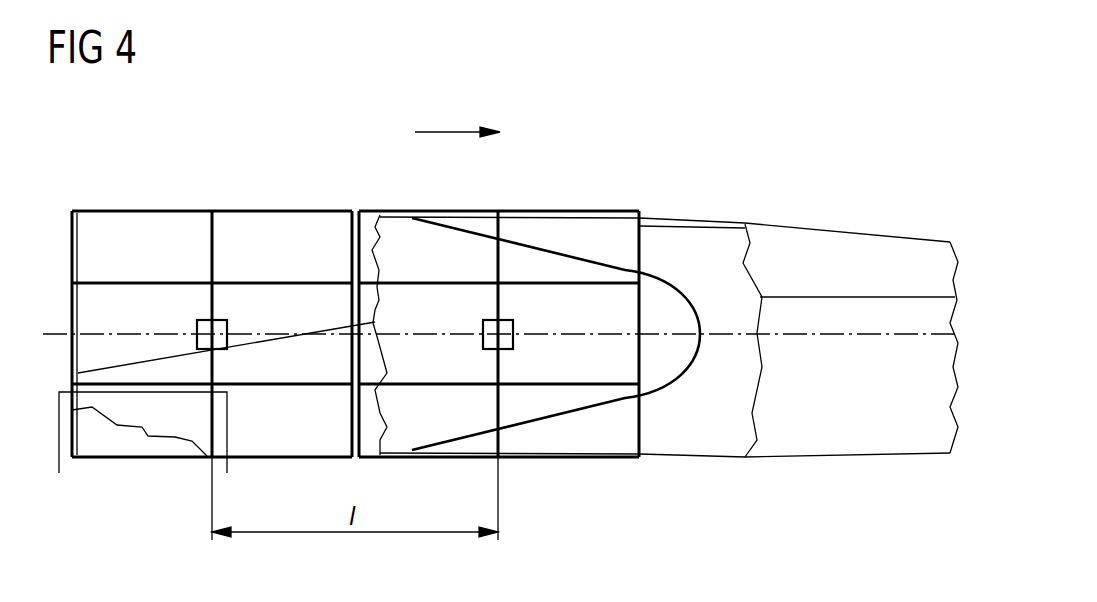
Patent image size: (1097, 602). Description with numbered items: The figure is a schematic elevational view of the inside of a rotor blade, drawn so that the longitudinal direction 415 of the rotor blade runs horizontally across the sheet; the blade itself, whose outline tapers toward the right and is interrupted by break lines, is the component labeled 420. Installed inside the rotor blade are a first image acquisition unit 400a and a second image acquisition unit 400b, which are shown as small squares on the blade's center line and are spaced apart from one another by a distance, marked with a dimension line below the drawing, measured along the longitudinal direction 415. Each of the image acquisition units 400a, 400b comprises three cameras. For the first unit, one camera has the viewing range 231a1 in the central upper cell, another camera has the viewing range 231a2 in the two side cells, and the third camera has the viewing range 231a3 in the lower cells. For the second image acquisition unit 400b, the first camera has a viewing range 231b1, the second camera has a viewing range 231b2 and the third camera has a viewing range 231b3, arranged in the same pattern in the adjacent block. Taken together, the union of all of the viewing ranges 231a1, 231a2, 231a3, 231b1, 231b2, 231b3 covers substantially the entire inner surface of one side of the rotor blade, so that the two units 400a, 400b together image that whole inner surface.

The viewing range 231a1 is at (267, 222).
The viewing range 231a2 is at (130, 300).
The viewing range 231a3 is at (142, 425).
The viewing range 231b1 is at (562, 272).
The viewing range 231b2 is at (423, 300).
The viewing range 231b3 is at (440, 432).
The first image acquisition unit 400a is at (218, 340).
The second image acquisition unit 400b is at (505, 340).
The longitudinal direction 415 is at (455, 132).
The cutting tool 420 is at (830, 163).